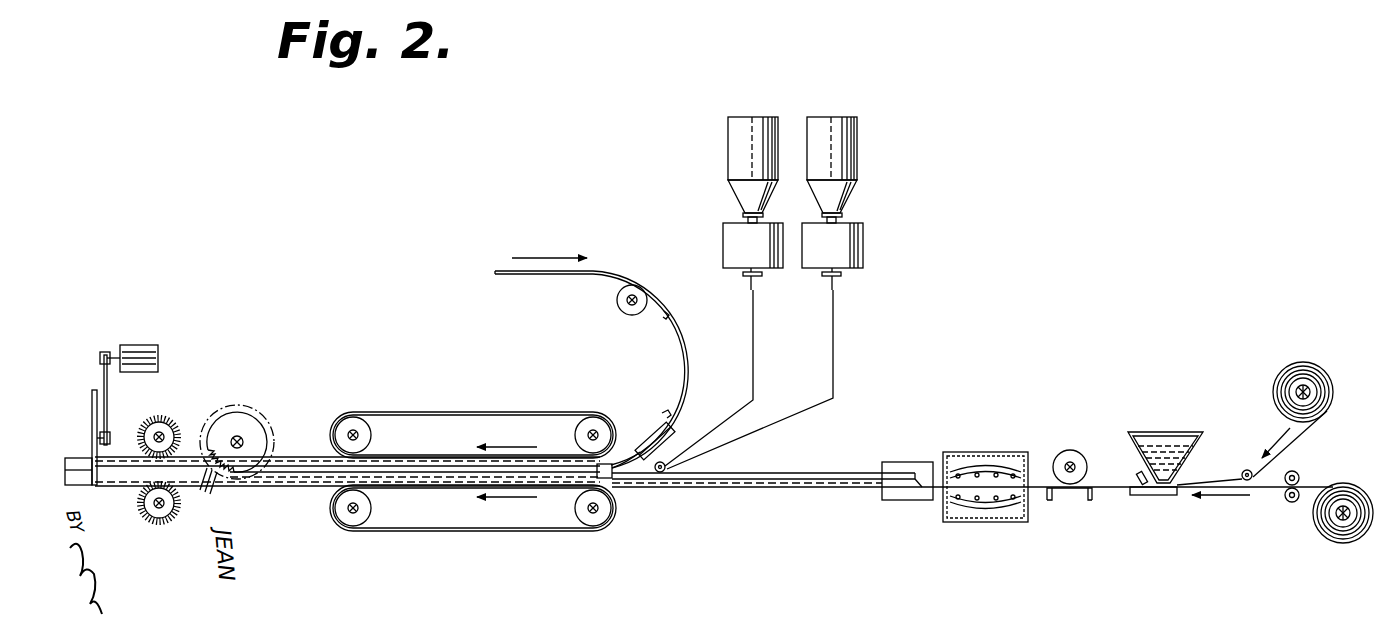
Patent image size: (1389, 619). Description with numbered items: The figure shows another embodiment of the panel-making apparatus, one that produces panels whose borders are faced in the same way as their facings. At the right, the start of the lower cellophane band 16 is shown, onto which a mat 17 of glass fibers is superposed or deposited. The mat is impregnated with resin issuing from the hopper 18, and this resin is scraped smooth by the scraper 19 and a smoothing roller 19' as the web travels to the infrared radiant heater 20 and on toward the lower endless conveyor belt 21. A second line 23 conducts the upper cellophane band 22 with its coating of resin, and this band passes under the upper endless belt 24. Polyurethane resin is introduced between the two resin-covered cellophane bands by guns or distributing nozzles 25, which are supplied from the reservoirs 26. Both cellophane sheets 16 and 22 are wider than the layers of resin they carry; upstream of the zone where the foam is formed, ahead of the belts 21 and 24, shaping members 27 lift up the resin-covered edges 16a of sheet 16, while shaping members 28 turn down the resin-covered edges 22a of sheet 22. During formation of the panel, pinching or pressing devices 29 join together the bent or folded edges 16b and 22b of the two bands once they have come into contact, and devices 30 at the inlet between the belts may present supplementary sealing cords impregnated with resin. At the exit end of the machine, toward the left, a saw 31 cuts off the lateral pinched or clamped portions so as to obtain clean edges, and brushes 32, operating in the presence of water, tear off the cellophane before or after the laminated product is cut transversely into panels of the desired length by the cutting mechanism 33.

The cellophane band 16 is at (318, 488).
The edges of sheet 16 16a is at (817, 473).
The folded edge of band 16 16b is at (477, 487).
The mat of glass fibers 17 is at (1287, 440).
The hopper 18 is at (1186, 464).
The scraper 19 is at (1123, 466).
The smoothing roller 19' is at (1069, 445).
The infrared radiant heater 20 is at (970, 455).
The endless conveyor belt 21 is at (402, 532).
The upper cellophane band 22 is at (318, 456).
The edges of sheet 22 22a is at (630, 460).
The folded edge of band 22 22b is at (470, 482).
The second line 23 is at (648, 289).
The endless belt 24 is at (406, 412).
The distributing nozzles 25 is at (662, 473).
The reservoirs 26 is at (822, 124).
The shaping members 27 is at (903, 462).
The shaping members 28 is at (667, 463).
The pinching or pressing devices 29 is at (436, 476).
The devices 30 is at (609, 479).
The saw 31 is at (240, 428).
The brushes 32 is at (141, 448).
The cutting mechanism 33 is at (92, 400).